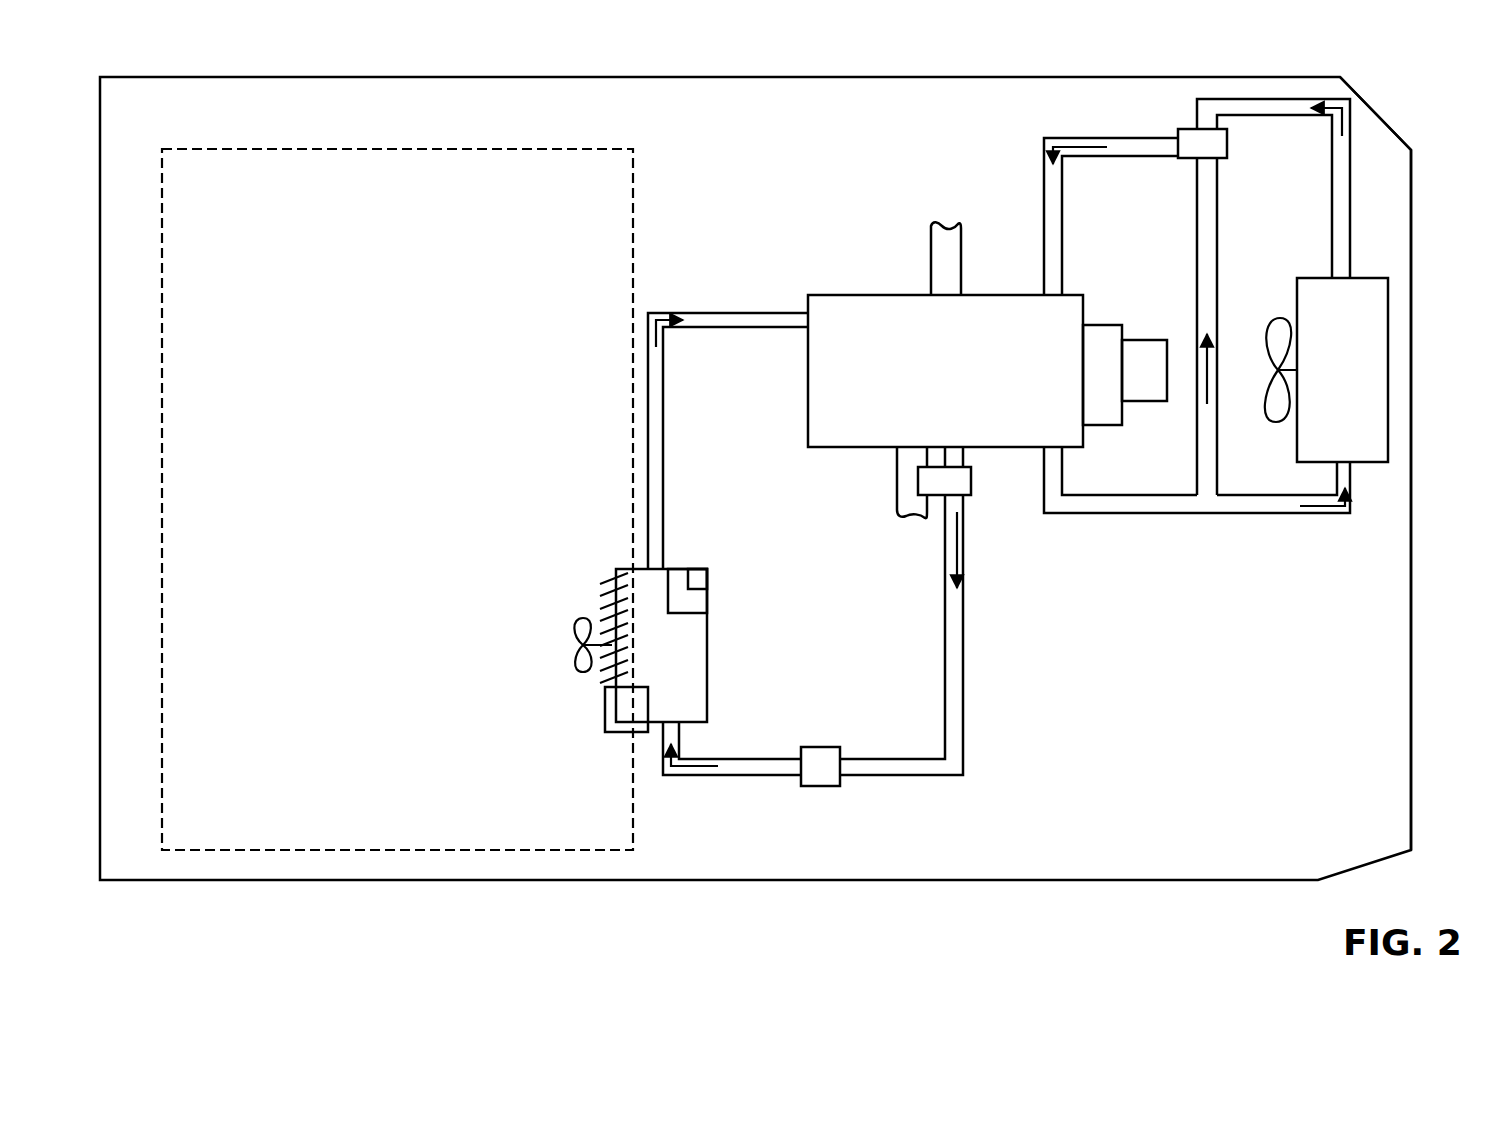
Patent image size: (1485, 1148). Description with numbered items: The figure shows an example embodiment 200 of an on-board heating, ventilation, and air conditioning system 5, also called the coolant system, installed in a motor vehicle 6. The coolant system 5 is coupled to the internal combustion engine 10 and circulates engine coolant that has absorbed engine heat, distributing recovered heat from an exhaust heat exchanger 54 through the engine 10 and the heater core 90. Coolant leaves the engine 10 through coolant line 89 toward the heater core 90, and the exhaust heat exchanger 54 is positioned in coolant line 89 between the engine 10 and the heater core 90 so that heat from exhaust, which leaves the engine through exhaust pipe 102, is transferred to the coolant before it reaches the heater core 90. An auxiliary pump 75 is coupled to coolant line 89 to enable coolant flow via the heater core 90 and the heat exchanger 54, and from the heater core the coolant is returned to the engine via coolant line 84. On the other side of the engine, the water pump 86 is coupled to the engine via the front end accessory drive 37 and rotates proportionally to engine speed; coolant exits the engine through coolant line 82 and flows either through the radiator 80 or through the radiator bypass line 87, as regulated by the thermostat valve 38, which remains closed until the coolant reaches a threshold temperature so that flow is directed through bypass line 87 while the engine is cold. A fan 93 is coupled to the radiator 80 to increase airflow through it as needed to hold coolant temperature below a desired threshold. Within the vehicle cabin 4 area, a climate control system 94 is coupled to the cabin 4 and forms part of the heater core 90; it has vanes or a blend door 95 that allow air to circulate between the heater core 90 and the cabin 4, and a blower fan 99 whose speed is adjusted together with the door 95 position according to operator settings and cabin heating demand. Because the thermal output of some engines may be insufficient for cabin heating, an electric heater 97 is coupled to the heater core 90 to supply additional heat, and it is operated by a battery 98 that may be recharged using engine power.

The motor vehicle 6 is at (630, 66).
The example embodiment 200 is at (1392, 92).
The vehicle cabin 4 is at (281, 545).
The internal combustion engine 10 is at (1066, 335).
The exhaust pipe 102 is at (897, 507).
The front end accessory drive 37 is at (1114, 376).
The water pump 86 is at (1156, 384).
The coolant line 84 is at (663, 426).
The heater core 90 is at (675, 659).
The electric heater 97 is at (707, 600).
The battery 98 is at (695, 573).
The vanes and/or blend door 95 is at (611, 577).
The fan 99 is at (582, 618).
The climate control system 94 is at (605, 729).
The coolant line 89 is at (946, 632).
The auxiliary pump 75 is at (834, 780).
The exhaust heat exchanger 54 is at (958, 494).
The coolant line 82 is at (1062, 200).
The radiator bypass line 87 is at (1197, 238).
The thermostat valve 38 is at (1216, 156).
The HVAC system 5 is at (1364, 216).
The radiator 80 is at (1357, 384).
The fan 93 is at (1273, 381).